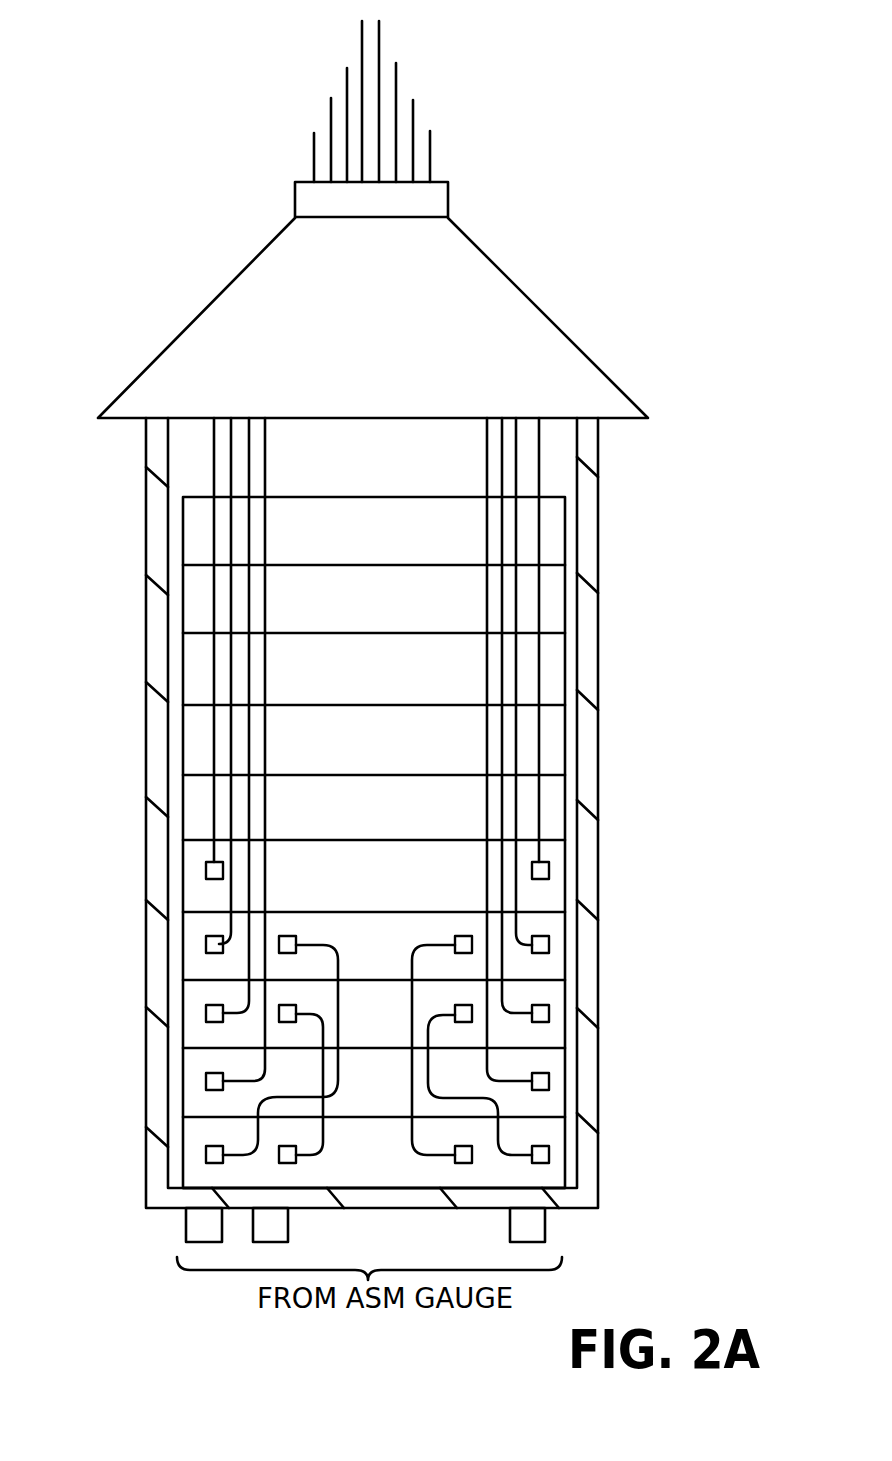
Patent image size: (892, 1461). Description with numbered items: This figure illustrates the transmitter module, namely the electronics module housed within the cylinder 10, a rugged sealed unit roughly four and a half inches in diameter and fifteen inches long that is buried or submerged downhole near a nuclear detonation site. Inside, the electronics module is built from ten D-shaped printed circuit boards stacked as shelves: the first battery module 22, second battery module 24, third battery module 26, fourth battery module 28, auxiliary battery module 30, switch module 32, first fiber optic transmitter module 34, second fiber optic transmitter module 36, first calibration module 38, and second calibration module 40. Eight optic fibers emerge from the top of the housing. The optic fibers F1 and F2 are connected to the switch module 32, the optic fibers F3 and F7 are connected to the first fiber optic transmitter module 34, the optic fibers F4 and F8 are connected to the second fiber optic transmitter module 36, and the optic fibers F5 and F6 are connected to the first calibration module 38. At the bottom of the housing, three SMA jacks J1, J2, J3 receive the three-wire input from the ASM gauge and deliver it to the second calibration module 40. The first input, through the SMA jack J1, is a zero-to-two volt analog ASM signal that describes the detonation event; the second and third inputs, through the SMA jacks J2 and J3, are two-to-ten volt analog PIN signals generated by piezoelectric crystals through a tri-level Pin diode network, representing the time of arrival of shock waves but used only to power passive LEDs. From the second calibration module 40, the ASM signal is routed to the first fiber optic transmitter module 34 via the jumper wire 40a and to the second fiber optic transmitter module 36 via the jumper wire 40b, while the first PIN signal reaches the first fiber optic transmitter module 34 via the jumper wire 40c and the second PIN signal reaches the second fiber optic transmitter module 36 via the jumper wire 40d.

The cylinder 10 is at (100, 581).
The first battery module 22 is at (390, 552).
The second battery module 24 is at (395, 622).
The third battery module 26 is at (397, 687).
The fourth battery module 28 is at (370, 755).
The auxiliary battery module 30 is at (371, 823).
The switch module 32 is at (395, 892).
The first fiber optic transmitter module 34 is at (395, 962).
The second fiber optic transmitter module 36 is at (395, 1030).
The first calibration module 38 is at (396, 1097).
The second calibration module 40 is at (395, 1165).
The jumper wire 40a is at (437, 942).
The jumper wire 40b is at (453, 1100).
The jumper wire 40c is at (310, 943).
The jumper wire 40d is at (325, 1150).
The optic fiber F1 is at (430, 148).
The optic fiber F2 is at (314, 151).
The optic fiber F3 is at (413, 118).
The optic fiber F4 is at (396, 85).
The optic fiber F5 is at (379, 44).
The optic fiber F6 is at (362, 44).
The optic fiber F7 is at (331, 112).
The optic fiber F8 is at (347, 81).
The SMA jack J1 is at (545, 1220).
The SMA jack J2 is at (263, 1243).
The SMA jack J3 is at (186, 1228).